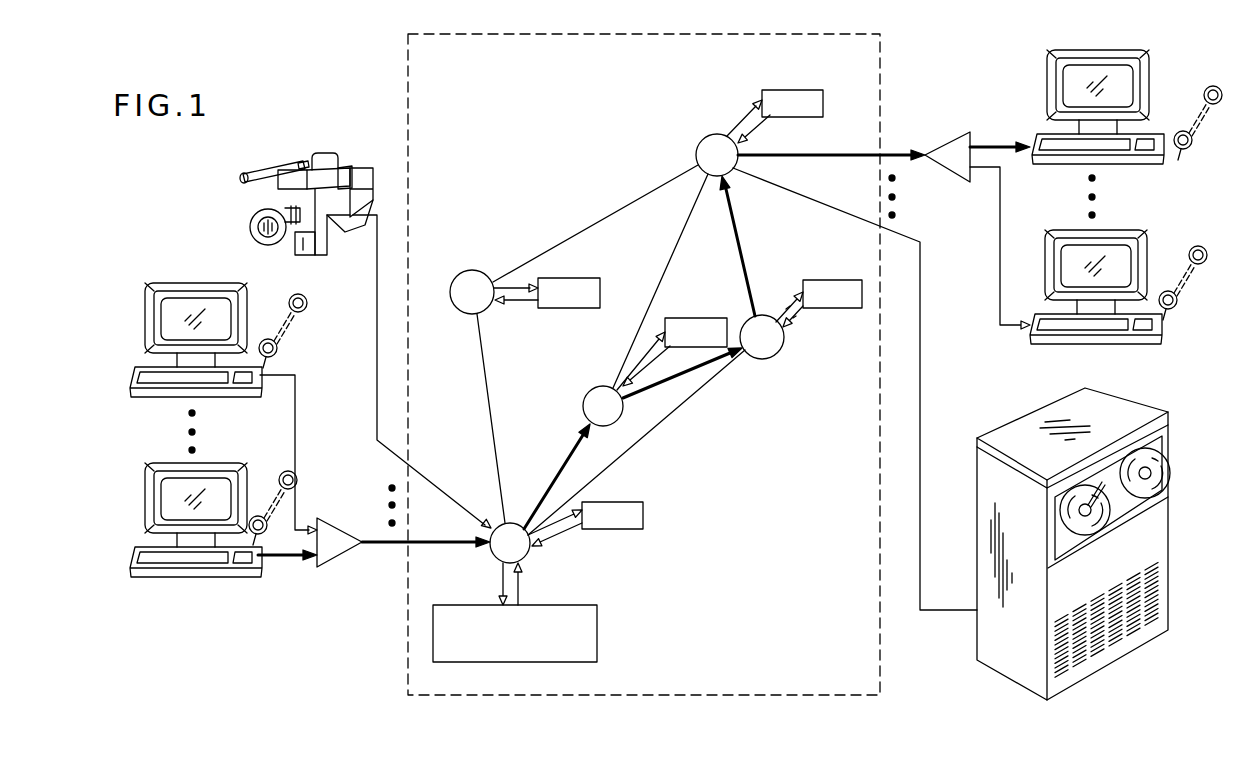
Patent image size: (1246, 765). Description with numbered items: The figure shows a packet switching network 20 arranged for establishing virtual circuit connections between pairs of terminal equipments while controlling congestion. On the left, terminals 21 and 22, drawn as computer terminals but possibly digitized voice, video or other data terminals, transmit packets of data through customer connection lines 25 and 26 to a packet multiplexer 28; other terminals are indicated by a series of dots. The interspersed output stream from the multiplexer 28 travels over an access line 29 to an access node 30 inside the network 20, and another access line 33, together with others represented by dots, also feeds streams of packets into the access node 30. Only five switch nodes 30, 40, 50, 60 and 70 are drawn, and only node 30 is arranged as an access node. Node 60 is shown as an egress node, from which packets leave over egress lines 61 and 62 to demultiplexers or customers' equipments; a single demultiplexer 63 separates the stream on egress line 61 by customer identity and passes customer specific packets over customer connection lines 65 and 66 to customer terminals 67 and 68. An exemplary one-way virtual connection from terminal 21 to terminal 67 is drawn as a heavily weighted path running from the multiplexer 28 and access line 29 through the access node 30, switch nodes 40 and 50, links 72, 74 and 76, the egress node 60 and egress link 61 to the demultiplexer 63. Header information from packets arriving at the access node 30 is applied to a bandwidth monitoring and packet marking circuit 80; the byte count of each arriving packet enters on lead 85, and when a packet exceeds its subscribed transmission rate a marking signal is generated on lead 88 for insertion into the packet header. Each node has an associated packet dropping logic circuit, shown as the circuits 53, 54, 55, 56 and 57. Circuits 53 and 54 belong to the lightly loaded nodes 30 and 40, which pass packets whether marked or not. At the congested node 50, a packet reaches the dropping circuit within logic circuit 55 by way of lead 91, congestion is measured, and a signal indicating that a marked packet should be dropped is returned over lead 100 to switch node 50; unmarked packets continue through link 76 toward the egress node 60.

The packet switching network 20 is at (476, 136).
The terminal 21 is at (160, 462).
The terminal 22 is at (206, 282).
The customer connection line 25 is at (276, 562).
The customer connection line 26 is at (296, 436).
The packet multiplexer 28 is at (332, 524).
The access line 29 is at (398, 550).
The access node 30 is at (537, 547).
The access line 33 is at (377, 290).
The switch node 40 is at (586, 401).
The switch node 50 is at (776, 356).
The packet dropping logic circuit 53 is at (645, 502).
The packet dropping logic circuit 54 is at (680, 318).
The packet dropping logic circuit 55 is at (840, 280).
The packet dropping logic circuit 56 is at (823, 103).
The packet dropping logic circuit 57 is at (572, 278).
The egress node 60 is at (700, 163).
The egress line 61 is at (788, 153).
The egress line 62 is at (818, 205).
The demultiplexer 63 is at (945, 140).
The customer connection line 65 is at (993, 140).
The customer connection line 66 is at (1000, 266).
The customer terminal 67 is at (1150, 98).
The customer terminal 68 is at (1147, 250).
The switch node 70 is at (470, 270).
The link 72 is at (540, 492).
The link 74 is at (652, 392).
The link 76 is at (736, 266).
The bandwidth monitoring and packet marking circuit 80 is at (598, 610).
The lead 85 is at (498, 588).
The lead 88 is at (526, 590).
The lead 91 is at (785, 302).
The lead 100 is at (796, 320).